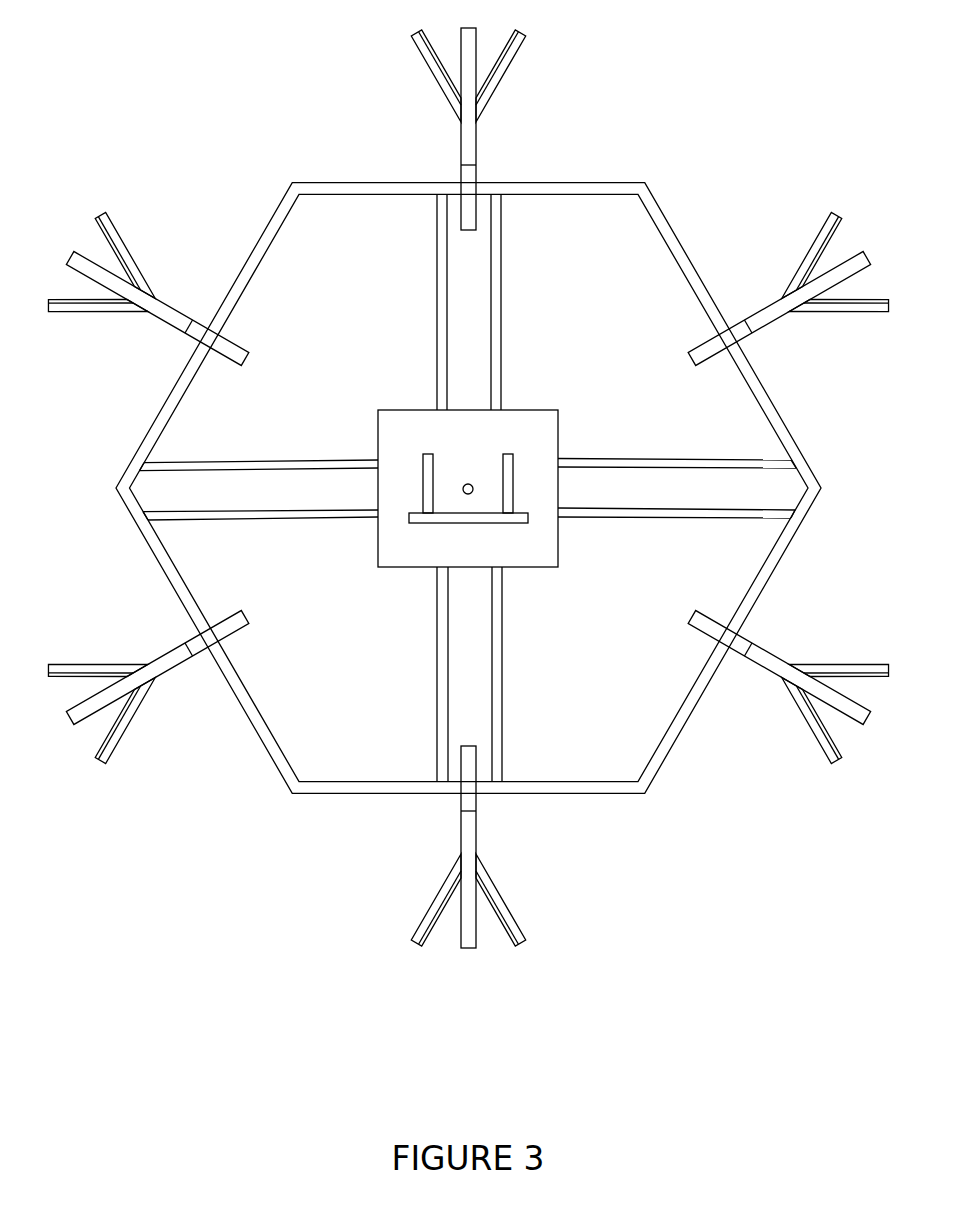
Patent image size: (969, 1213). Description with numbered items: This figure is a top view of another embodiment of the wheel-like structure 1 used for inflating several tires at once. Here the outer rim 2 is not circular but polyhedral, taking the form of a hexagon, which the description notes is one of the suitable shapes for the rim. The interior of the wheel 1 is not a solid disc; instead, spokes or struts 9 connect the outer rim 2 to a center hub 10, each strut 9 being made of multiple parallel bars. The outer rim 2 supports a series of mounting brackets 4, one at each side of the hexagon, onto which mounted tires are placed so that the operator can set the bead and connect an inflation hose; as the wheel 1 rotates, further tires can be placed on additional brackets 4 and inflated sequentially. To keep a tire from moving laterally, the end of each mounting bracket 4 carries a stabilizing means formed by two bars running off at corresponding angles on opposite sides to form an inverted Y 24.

The wheel-like structure 1 is at (231, 175).
The outer rim 2 is at (357, 795).
The mounting bracket 4 is at (528, 903).
The spokes or struts 9 is at (500, 593).
The center hub 10 is at (402, 407).
The inverted Y 24 is at (808, 755).